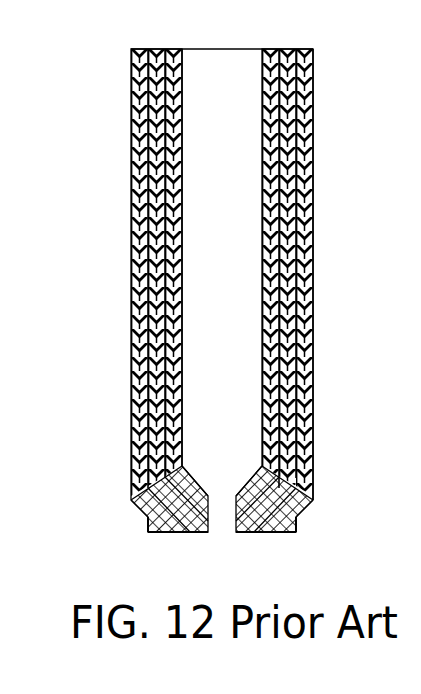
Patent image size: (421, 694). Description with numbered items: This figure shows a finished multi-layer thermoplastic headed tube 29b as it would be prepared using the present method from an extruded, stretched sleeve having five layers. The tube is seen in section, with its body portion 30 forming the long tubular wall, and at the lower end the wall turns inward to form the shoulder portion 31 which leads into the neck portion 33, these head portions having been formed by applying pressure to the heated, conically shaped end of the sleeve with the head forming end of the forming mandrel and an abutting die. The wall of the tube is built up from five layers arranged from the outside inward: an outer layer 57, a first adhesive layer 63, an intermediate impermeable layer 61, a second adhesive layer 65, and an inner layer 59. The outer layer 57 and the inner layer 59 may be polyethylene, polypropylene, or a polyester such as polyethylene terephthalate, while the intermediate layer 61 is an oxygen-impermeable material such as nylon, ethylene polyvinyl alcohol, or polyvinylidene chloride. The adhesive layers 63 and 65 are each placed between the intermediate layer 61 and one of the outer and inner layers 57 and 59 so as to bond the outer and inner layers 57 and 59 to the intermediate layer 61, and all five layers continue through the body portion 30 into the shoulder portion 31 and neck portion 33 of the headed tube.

The multi-layer thermoplastic headed tube 29b is at (131, 168).
The body portion 30 is at (263, 180).
The outer layer 57 is at (131, 217).
The adhesive layer 63 is at (131, 248).
The intermediate impermeable layer 61 is at (150, 312).
The adhesive layer 65 is at (158, 365).
The inner layer 59 is at (165, 406).
The shoulder portion 31 is at (129, 500).
The neck portion 33 is at (145, 528).